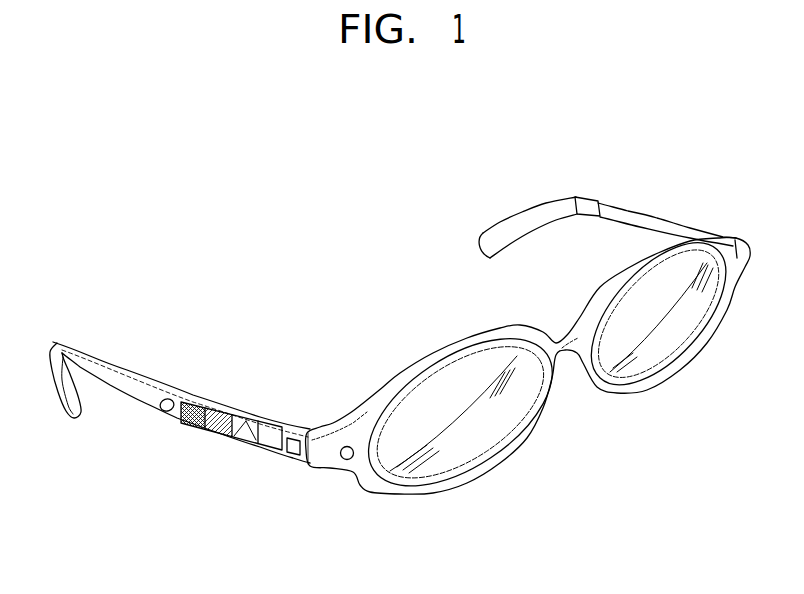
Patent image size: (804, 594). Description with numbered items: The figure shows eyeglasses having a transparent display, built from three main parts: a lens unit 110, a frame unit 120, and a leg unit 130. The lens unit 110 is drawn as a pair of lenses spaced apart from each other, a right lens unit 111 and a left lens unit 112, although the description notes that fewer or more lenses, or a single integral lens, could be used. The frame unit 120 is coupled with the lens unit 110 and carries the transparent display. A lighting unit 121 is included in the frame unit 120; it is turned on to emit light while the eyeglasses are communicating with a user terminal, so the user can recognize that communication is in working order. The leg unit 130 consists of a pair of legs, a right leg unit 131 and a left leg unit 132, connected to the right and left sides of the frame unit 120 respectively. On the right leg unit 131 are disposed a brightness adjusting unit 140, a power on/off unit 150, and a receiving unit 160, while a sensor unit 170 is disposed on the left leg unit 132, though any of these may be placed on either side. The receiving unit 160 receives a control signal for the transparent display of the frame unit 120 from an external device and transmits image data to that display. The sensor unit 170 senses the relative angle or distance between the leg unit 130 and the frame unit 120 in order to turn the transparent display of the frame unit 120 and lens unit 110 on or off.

The lens unit 110 is at (514, 388).
The right lens unit 111 is at (480, 447).
The left lens unit 112 is at (660, 353).
The frame unit 120 is at (323, 484).
The lighting unit 121 is at (342, 461).
The leg unit 130 is at (393, 338).
The right leg unit 131 is at (180, 409).
The left leg unit 132 is at (501, 209).
The brightness adjusting unit 140 is at (227, 440).
The power on/off unit 150 is at (163, 414).
The receiving unit 160 is at (292, 453).
The sensor unit 170 is at (590, 197).